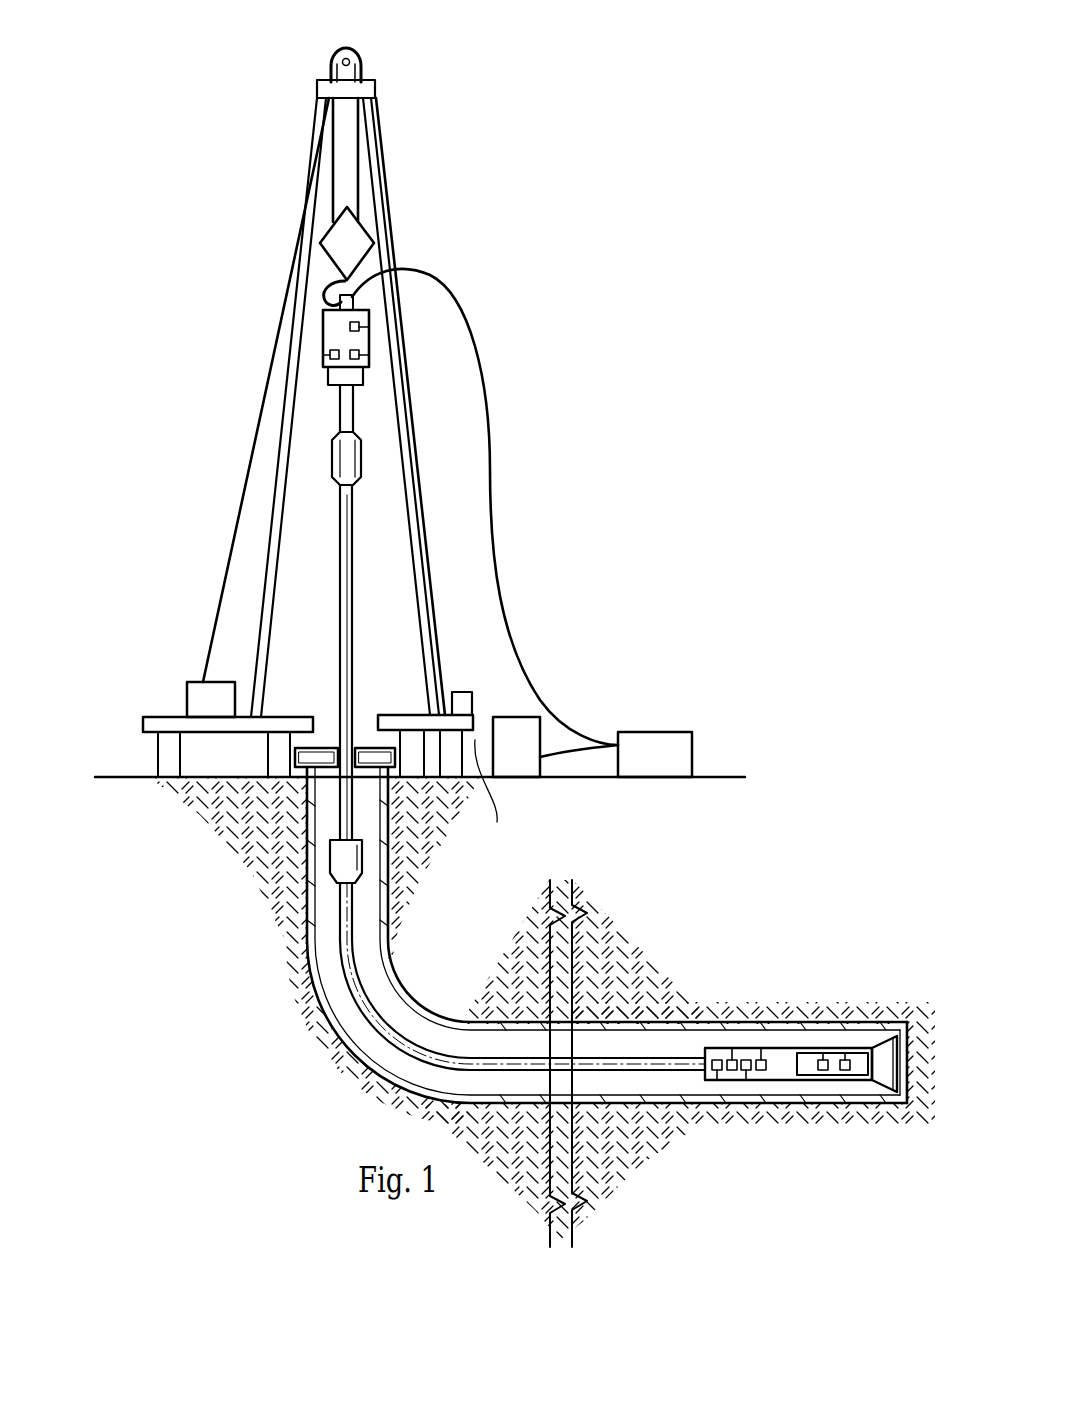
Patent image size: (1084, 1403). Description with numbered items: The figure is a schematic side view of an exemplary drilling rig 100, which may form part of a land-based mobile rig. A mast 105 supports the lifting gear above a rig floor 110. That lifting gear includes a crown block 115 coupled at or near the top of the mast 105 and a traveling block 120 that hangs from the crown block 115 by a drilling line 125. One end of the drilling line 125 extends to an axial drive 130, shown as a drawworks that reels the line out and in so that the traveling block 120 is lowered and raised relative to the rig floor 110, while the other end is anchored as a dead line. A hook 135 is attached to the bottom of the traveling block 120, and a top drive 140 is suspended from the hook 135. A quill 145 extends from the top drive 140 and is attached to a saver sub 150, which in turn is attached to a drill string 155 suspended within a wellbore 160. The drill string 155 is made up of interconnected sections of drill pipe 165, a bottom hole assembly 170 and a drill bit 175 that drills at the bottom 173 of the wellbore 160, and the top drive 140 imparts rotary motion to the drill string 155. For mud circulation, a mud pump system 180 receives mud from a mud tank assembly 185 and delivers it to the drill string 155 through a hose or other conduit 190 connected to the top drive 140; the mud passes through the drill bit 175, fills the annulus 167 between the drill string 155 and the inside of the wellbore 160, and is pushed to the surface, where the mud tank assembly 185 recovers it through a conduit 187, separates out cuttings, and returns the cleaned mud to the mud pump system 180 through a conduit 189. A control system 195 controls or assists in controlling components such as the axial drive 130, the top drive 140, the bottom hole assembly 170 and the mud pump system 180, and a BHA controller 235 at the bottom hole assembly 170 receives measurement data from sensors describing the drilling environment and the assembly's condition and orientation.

The drilling rig 100 is at (720, 133).
The mast 105 is at (381, 140).
The rig floor 110 is at (143, 724).
The crown block 115 is at (343, 50).
The traveling block 120 is at (372, 256).
The drilling line 125 is at (322, 150).
The axial drive 130 is at (187, 702).
The hook 135 is at (322, 288).
The top drive 140 is at (323, 343).
The quill 145 is at (340, 408).
The saver sub 150 is at (333, 458).
The drill string 155 is at (334, 536).
The wellbore 160 is at (332, 1001).
The drill pipe 165 is at (339, 700).
The annulus 167 is at (691, 1050).
The bottom hole assembly 170 is at (843, 1081).
The bottom of the wellbore 173 is at (905, 1087).
The drill bit 175 is at (882, 1040).
The mud pump system 180 is at (655, 732).
The mud tank assembly 185 is at (510, 717).
The conduit 187 is at (494, 796).
The conduit 189 is at (585, 762).
The hose or other conduit 190 is at (492, 450).
The control system 195 is at (462, 692).
The BHA controller 235 is at (805, 1060).